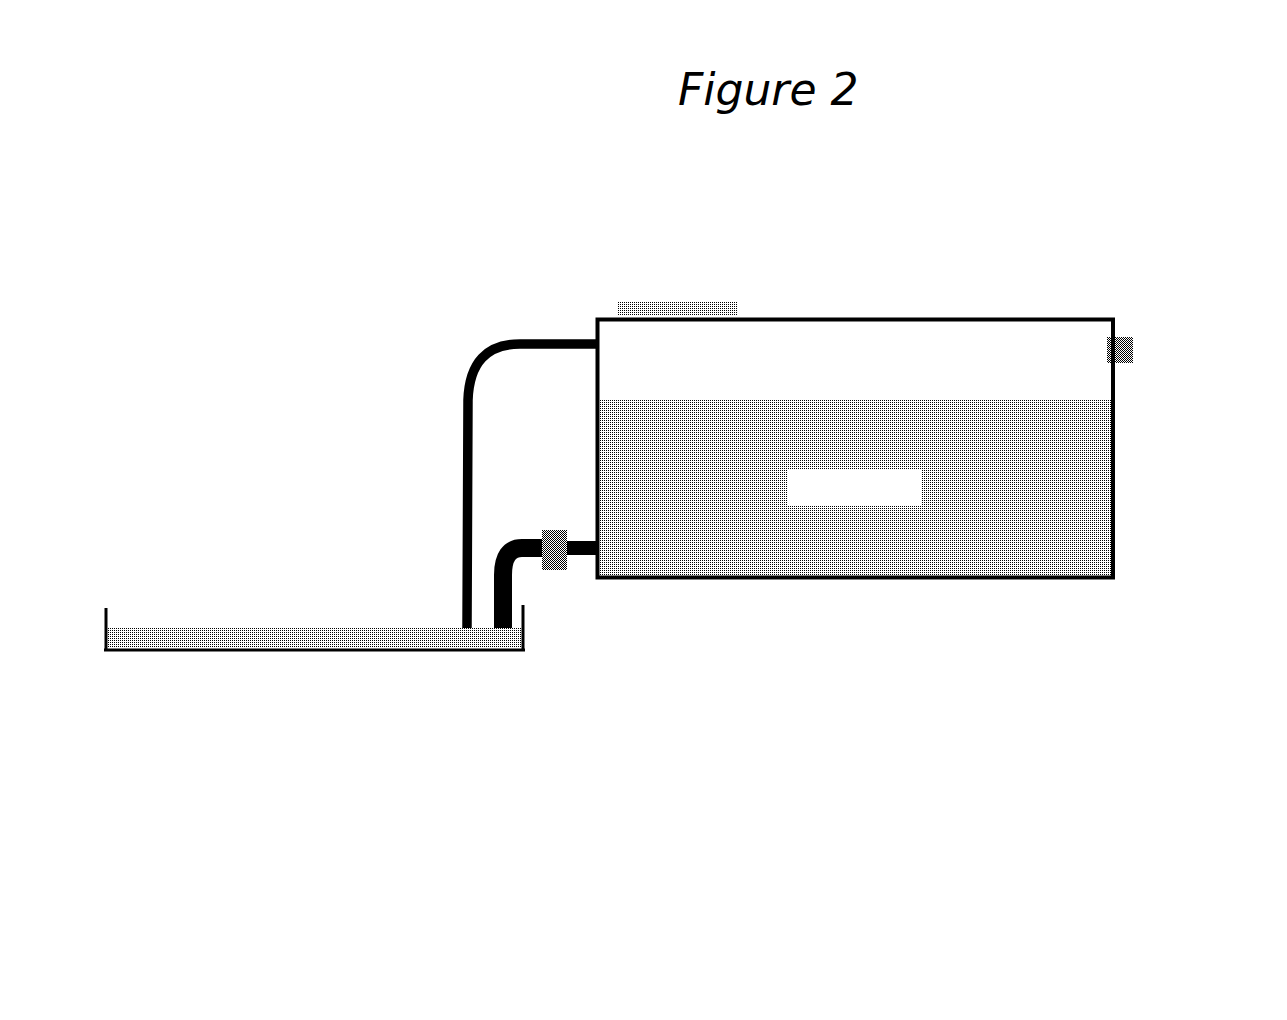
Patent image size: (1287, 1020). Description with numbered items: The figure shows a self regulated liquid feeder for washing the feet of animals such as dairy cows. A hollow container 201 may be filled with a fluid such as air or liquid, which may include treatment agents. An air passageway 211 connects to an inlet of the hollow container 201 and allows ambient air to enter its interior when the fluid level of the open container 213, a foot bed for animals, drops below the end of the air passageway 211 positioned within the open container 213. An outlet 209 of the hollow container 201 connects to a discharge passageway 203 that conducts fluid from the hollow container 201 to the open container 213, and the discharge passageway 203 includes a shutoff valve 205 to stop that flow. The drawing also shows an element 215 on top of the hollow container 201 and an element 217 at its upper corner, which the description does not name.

The hollow container 201 is at (863, 312).
The discharge passageway 203 is at (531, 486).
The shutoff valve 205 is at (532, 500).
The outlet 209 is at (615, 525).
The air passageway 211 is at (455, 342).
The open container 213 is at (230, 650).
The lid 215 is at (703, 255).
The sensor 217 is at (1109, 298).